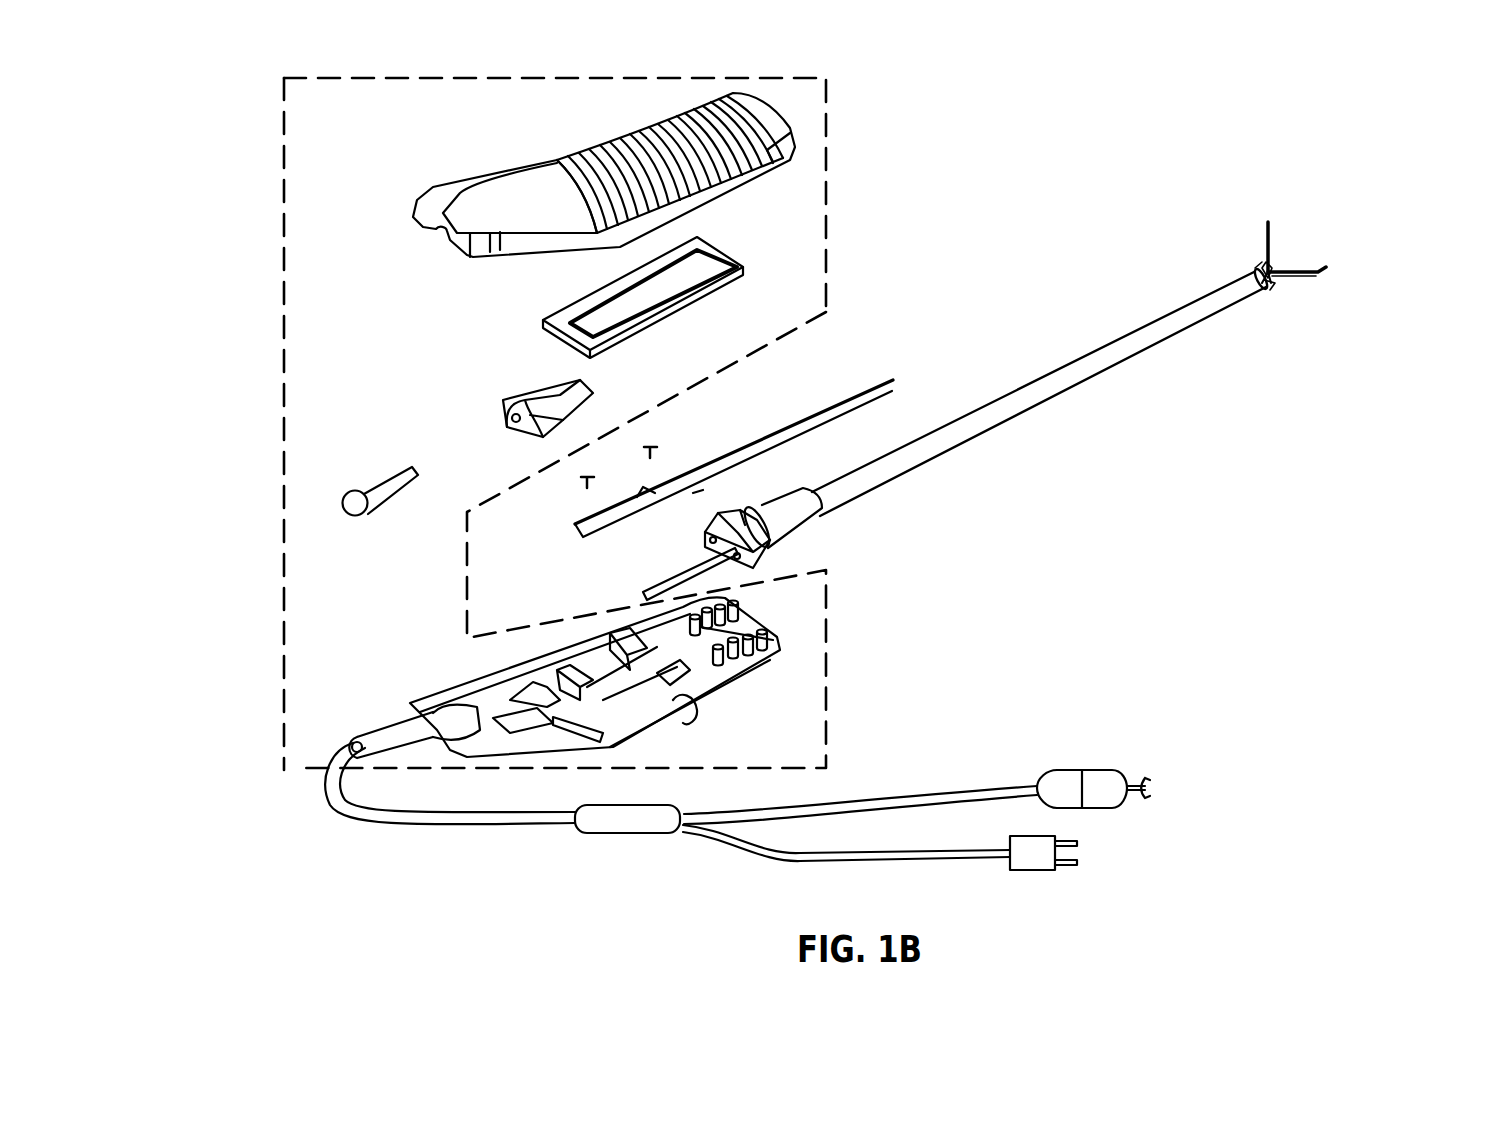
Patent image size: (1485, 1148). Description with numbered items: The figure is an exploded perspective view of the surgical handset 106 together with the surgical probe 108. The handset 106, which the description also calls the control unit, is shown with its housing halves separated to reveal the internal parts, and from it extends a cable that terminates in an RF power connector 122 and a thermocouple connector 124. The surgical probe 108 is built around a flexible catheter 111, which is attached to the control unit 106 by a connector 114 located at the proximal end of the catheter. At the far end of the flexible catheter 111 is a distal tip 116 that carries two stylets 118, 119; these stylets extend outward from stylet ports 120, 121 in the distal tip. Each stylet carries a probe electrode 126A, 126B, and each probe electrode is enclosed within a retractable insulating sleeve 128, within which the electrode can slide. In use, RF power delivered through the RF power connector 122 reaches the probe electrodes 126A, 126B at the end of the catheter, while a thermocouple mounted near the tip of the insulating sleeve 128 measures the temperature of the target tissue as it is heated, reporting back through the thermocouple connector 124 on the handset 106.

The surgical handset 106 is at (283, 748).
The surgical probe 108 is at (1016, 326).
The flexible catheter 111 is at (1128, 357).
The connector 114 is at (830, 530).
The distal tip 116 is at (1278, 288).
The stylet 118 is at (1258, 250).
The stylet 119 is at (1292, 262).
The stylet port 120 is at (1258, 268).
The stylet port 121 is at (1267, 285).
The RF power connector 122 is at (1068, 770).
The thermocouple connector 124 is at (1027, 872).
The probe electrode 126A is at (1272, 232).
The probe electrode 126B is at (1317, 273).
The retractable insulating sleeve 128 is at (1290, 277).